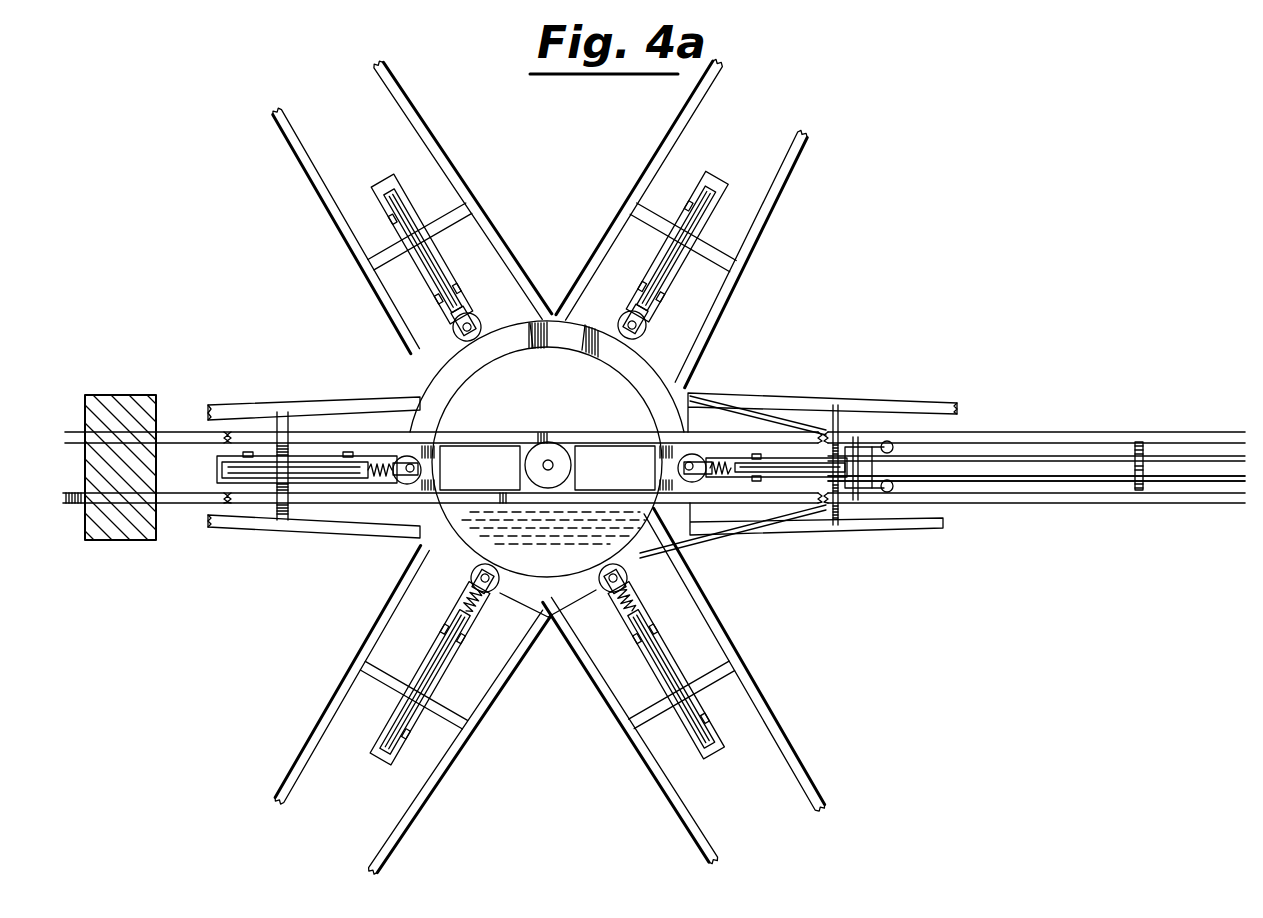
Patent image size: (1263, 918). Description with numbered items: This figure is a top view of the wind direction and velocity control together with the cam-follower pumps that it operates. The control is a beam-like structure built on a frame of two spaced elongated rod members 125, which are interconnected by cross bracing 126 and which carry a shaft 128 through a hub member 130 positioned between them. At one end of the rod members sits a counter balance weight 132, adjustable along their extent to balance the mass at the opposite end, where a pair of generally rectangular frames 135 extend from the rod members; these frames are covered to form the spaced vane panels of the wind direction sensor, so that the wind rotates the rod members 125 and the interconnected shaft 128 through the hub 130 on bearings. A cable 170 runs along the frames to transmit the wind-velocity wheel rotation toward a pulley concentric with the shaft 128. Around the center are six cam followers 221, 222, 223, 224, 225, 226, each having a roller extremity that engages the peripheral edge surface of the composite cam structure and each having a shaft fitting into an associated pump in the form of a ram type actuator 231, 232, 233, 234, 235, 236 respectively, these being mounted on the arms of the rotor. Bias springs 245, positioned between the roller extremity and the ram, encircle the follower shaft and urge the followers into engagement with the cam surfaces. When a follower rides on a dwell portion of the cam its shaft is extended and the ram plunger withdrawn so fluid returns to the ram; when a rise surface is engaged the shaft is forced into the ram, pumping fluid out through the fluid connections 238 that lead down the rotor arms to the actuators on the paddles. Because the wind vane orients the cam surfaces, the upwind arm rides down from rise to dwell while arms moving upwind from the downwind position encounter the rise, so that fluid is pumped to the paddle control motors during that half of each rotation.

The elongated rod members 125 is at (836, 420).
The cross bracing 126 is at (1143, 460).
The shaft 128 is at (548, 462).
The hub member 130 is at (560, 450).
The counter balance weight 132 is at (148, 540).
The rectangular frames 135 is at (1022, 432).
The cable 170 is at (1067, 481).
The cam follower 221 is at (420, 472).
The cam follower 222 is at (485, 577).
The cam follower 223 is at (662, 572).
The cam follower 224 is at (698, 481).
The cam follower 225 is at (666, 340).
The cam follower 226 is at (491, 318).
The ram type actuator 231 is at (278, 410).
The ram type actuator 232 is at (432, 682).
The ram type actuator 233 is at (665, 680).
The ram type actuator 234 is at (772, 477).
The ram type actuator 235 is at (683, 268).
The ram type actuator 236 is at (452, 253).
The fluid connections 238 is at (372, 197).
The bias springs 245 is at (358, 460).